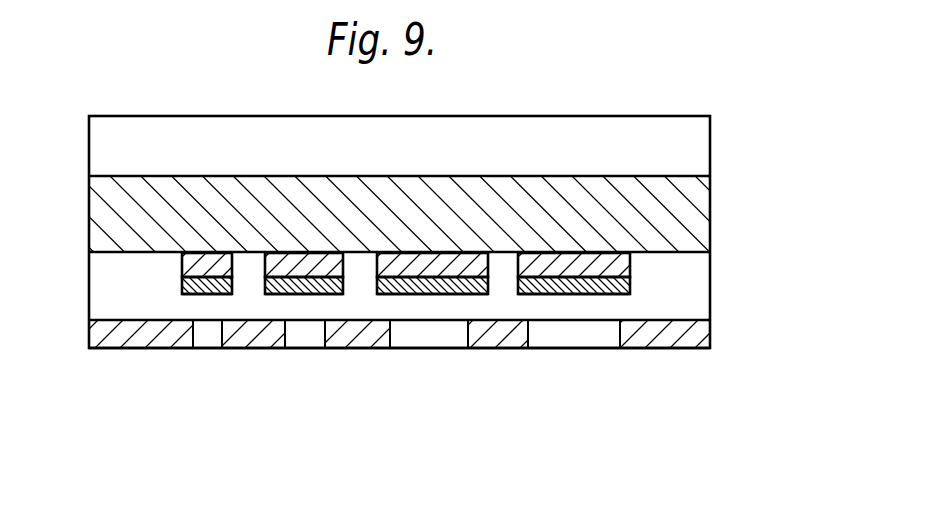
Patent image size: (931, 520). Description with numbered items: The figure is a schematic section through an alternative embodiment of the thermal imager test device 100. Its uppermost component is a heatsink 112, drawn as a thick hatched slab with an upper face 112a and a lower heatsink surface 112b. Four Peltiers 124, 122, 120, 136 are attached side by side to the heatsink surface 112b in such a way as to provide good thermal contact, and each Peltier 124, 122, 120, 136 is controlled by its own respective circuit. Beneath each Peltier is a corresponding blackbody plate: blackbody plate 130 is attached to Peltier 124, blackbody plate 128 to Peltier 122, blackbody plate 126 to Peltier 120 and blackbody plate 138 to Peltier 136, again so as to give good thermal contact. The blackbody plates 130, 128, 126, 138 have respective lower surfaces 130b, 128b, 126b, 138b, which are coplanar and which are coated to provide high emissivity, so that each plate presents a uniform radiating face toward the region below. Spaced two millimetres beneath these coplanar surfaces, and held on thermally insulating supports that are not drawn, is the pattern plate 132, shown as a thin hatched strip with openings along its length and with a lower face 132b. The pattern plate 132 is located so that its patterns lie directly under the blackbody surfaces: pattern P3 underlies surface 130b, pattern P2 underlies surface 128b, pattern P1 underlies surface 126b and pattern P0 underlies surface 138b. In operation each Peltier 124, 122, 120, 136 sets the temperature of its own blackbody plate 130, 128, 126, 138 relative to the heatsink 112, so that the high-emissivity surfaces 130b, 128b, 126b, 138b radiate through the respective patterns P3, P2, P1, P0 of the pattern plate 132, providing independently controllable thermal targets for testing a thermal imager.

The thermal imager test device 100 is at (124, 88).
The heatsink 112 is at (706, 216).
The top surface of substrate 112a is at (678, 174).
The heatsink surface 112b is at (690, 254).
The Peltier 120 is at (432, 264).
The Peltier 122 is at (305, 264).
The Peltier 124 is at (207, 256).
The Peltier 136 is at (552, 264).
The blackbody plate 126 is at (446, 296).
The lower surface 126b is at (383, 296).
The blackbody plate 128 is at (347, 294).
The lower surface 128b is at (312, 296).
The blackbody plate 130 is at (208, 296).
The lower surface 130b is at (191, 296).
The blackbody plate 138 is at (628, 295).
The lower surface 138b is at (573, 295).
The pattern plate 132 is at (695, 335).
The bottom surface of bottom layer 132b is at (695, 350).
The pattern P3 is at (208, 337).
The pattern P2 is at (303, 337).
The pattern P1 is at (430, 337).
The pattern P0 is at (583, 337).